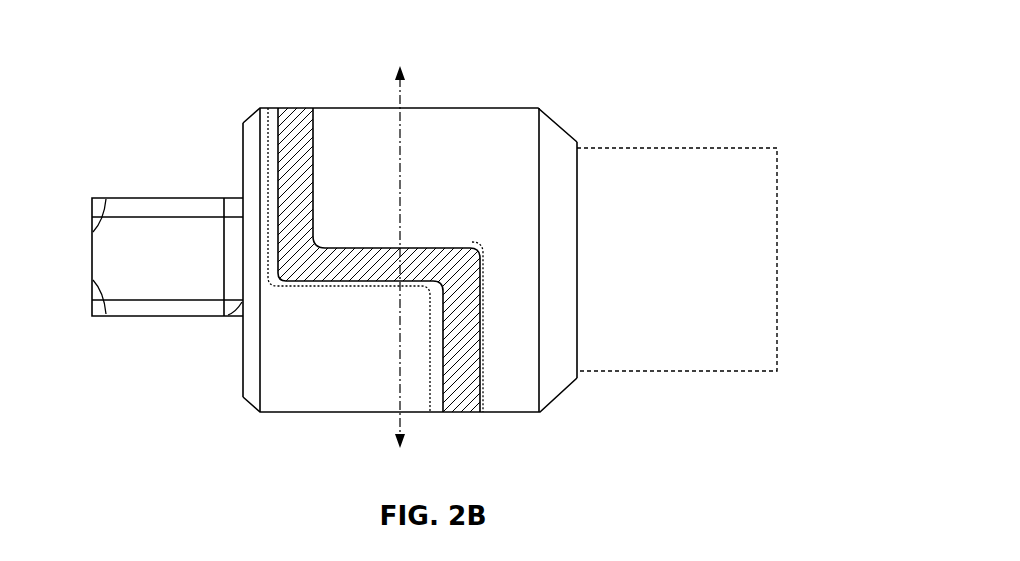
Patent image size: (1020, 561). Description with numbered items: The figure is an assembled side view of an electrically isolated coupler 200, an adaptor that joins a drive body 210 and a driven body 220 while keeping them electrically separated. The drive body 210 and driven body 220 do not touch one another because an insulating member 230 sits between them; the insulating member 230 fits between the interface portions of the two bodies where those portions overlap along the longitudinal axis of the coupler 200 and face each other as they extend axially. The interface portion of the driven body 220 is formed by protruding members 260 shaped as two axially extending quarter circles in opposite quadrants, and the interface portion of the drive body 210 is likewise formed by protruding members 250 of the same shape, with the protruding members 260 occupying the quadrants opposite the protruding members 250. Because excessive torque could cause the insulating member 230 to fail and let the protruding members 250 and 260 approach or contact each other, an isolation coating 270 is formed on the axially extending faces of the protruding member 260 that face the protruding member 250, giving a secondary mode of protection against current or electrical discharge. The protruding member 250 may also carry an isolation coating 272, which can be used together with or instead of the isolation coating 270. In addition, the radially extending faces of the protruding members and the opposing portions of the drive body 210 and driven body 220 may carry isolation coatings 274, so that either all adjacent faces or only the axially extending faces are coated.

The electrically isolated coupler 200 is at (681, 45).
The drive body 210 is at (252, 147).
The driven body 220 is at (598, 170).
The insulating member 230 is at (293, 120).
The protruding members 250 is at (342, 396).
The protruding members 260 is at (450, 118).
The isolation coating 270 is at (425, 242).
The isolation coating 272 is at (343, 285).
The isolation coatings 274 is at (265, 207).